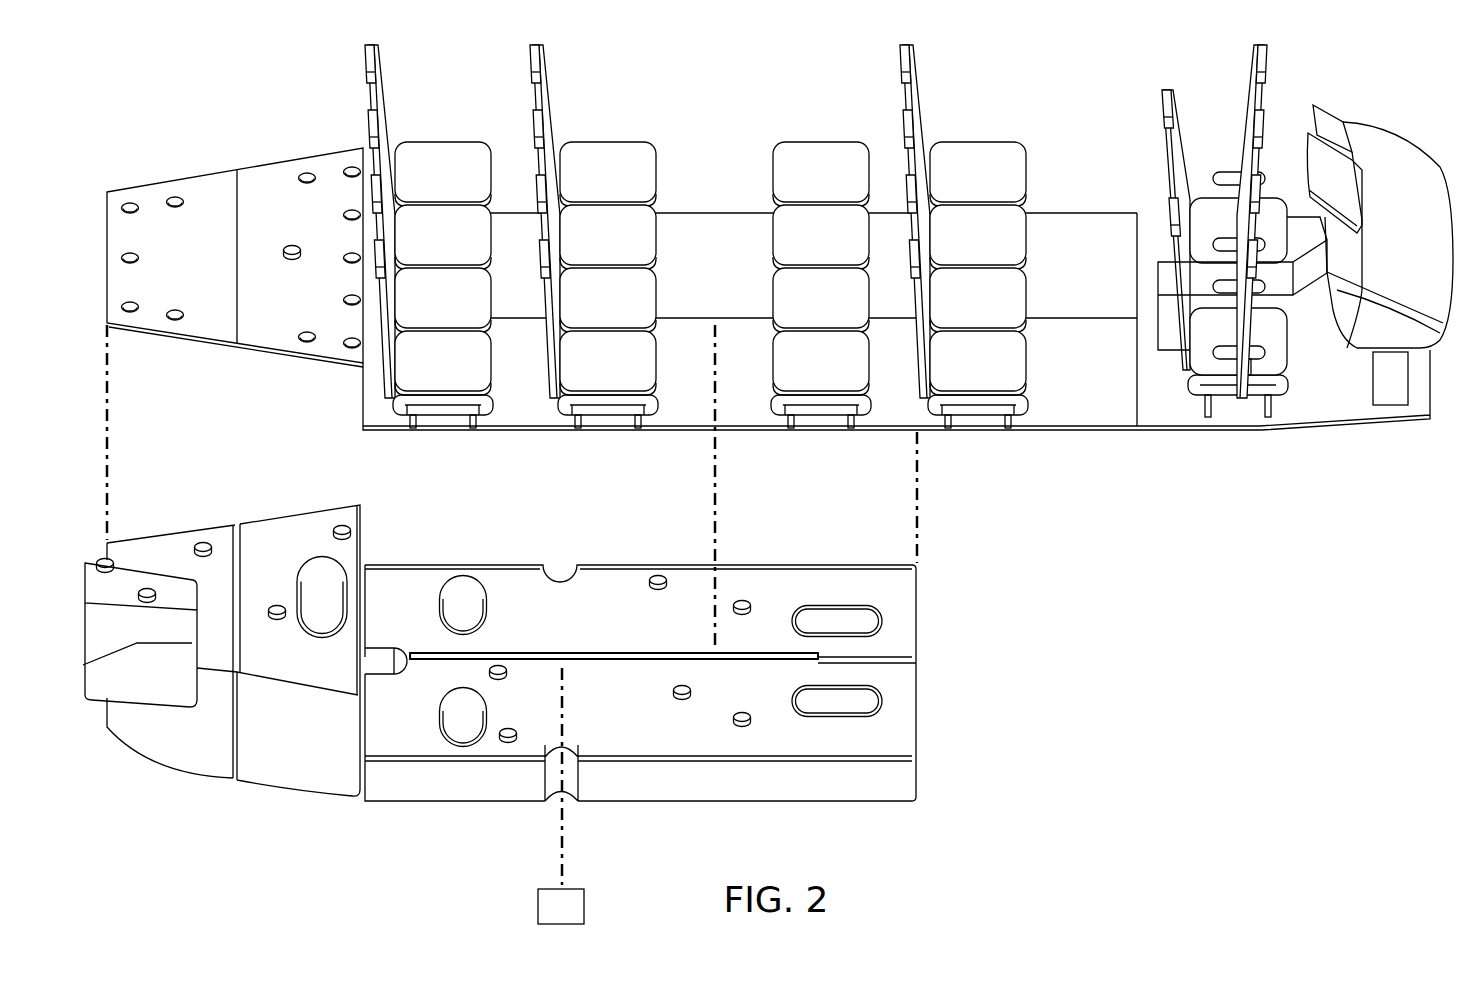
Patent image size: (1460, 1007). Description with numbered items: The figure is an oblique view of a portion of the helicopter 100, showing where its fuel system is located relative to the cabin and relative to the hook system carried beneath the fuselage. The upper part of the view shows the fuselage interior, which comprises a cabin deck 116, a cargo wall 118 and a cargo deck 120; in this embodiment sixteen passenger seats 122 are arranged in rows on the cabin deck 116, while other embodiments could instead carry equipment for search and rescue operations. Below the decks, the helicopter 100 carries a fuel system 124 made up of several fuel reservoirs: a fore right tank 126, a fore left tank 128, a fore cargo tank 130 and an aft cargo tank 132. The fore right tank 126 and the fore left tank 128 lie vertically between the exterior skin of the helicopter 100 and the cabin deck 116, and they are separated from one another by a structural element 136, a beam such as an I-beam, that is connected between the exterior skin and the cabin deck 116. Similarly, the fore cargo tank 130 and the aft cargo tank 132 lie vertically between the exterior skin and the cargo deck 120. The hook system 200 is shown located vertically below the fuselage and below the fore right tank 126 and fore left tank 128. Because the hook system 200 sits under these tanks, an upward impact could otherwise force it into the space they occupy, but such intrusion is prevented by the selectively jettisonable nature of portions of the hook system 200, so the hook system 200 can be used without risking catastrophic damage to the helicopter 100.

The helicopter 100 is at (768, 465).
The cabin deck 116 is at (1085, 220).
The cargo wall 118 is at (361, 397).
The cargo deck 120 is at (276, 174).
The passenger seats 122 is at (447, 110).
The fuel system 124 is at (196, 789).
The fore right tank 126 is at (623, 575).
The fore left tank 128 is at (660, 729).
The fore cargo tank 130 is at (287, 527).
The aft cargo tank 132 is at (171, 543).
The structural element 136 is at (647, 652).
The hook system 200 is at (528, 910).